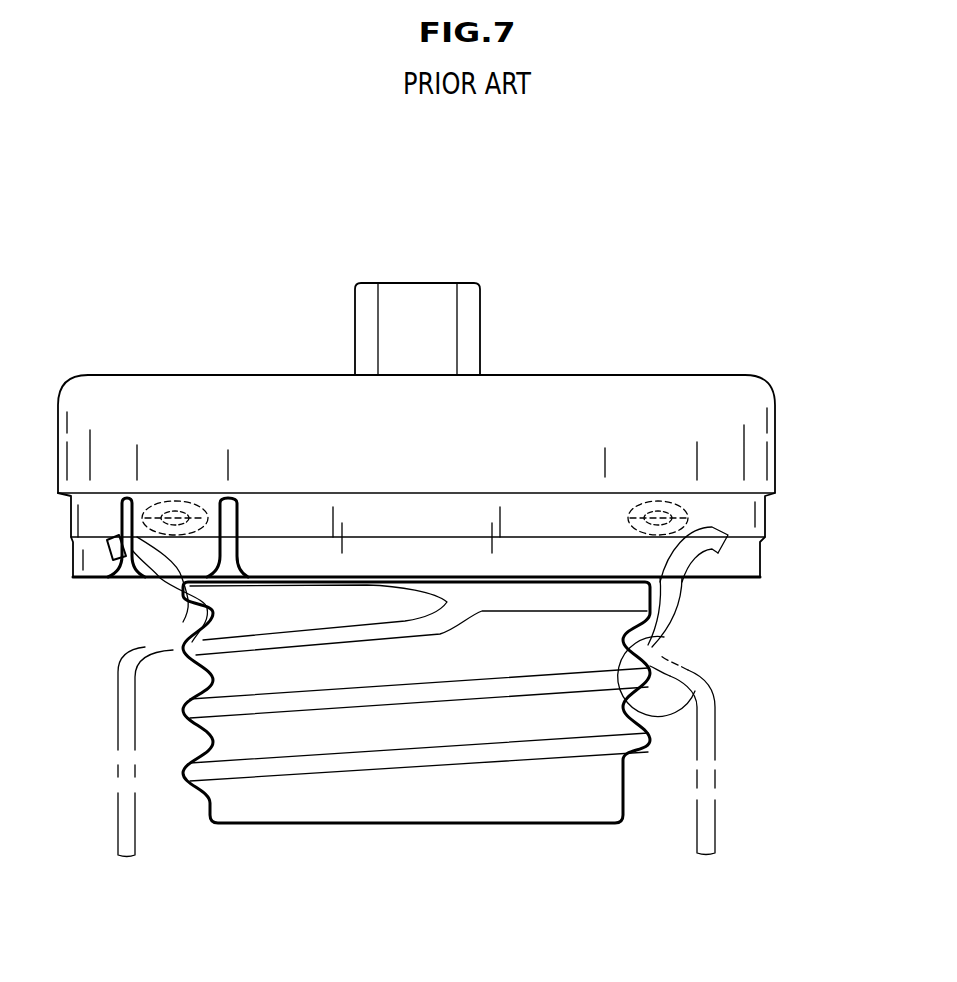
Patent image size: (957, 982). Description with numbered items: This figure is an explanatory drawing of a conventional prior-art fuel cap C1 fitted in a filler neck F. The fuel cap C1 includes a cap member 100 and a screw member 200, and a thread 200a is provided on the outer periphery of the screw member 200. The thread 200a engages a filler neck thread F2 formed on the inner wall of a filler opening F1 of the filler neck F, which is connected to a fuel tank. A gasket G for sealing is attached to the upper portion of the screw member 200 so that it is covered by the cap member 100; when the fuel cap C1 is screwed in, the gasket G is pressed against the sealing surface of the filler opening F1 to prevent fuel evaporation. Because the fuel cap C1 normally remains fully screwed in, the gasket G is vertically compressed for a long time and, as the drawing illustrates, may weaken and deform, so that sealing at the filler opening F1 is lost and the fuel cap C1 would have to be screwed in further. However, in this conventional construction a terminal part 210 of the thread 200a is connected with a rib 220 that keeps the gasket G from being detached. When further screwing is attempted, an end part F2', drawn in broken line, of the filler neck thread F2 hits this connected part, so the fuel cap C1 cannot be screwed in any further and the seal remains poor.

The fuel cap C1 is at (633, 265).
The cap member 100 is at (750, 324).
The screw member 200 is at (638, 792).
The thread 200a is at (190, 657).
The terminal part of the thread 210 is at (430, 625).
The rib 220 is at (638, 597).
The gasket G is at (176, 540).
The filler neck F is at (715, 782).
The filler opening F1 is at (690, 527).
The filler neck thread F2 is at (475, 535).
The end part of the filler neck thread F2' is at (456, 464).